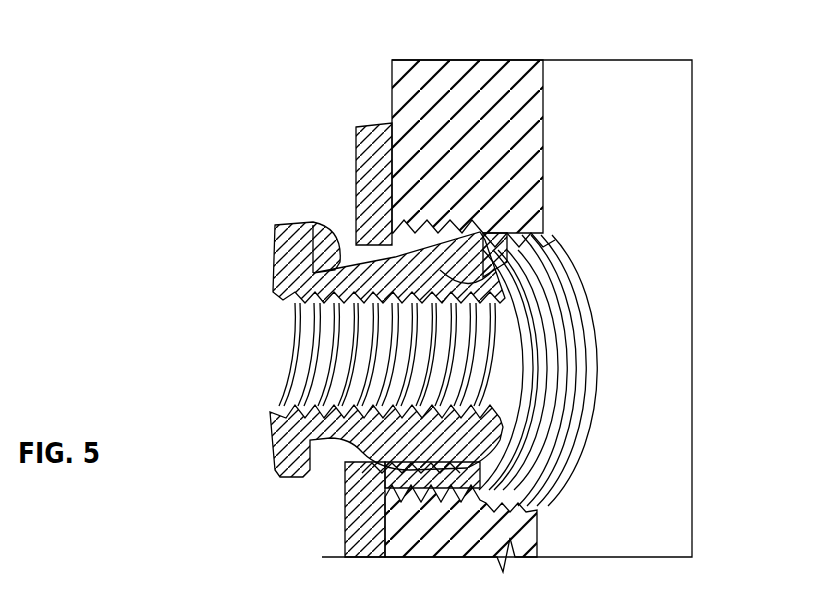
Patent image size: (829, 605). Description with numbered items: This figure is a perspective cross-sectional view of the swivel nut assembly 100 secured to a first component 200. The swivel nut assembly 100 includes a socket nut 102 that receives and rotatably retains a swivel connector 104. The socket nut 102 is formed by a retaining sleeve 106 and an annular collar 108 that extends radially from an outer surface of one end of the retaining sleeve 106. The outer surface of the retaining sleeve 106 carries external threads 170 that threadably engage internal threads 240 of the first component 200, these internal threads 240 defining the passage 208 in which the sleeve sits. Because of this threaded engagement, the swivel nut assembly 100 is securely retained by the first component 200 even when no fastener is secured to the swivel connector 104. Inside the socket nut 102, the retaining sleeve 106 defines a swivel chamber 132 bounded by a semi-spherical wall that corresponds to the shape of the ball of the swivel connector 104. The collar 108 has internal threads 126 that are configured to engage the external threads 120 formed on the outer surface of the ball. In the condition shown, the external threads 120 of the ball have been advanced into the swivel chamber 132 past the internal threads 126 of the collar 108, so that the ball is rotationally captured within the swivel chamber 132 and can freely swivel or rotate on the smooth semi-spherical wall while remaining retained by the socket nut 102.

The swivel nut assembly 100 is at (330, 64).
The socket nut 102 is at (376, 118).
The swivel connector 104 is at (280, 478).
The retaining sleeve 106 is at (543, 232).
The annular collar 108 is at (356, 148).
The external threads 120 is at (470, 292).
The internal threads 126 is at (345, 515).
The swivel chamber 132 is at (513, 248).
The external threads 170 is at (360, 252).
The first component 200 is at (425, 68).
The passage 208 is at (565, 262).
The internal threads 240 is at (485, 270).